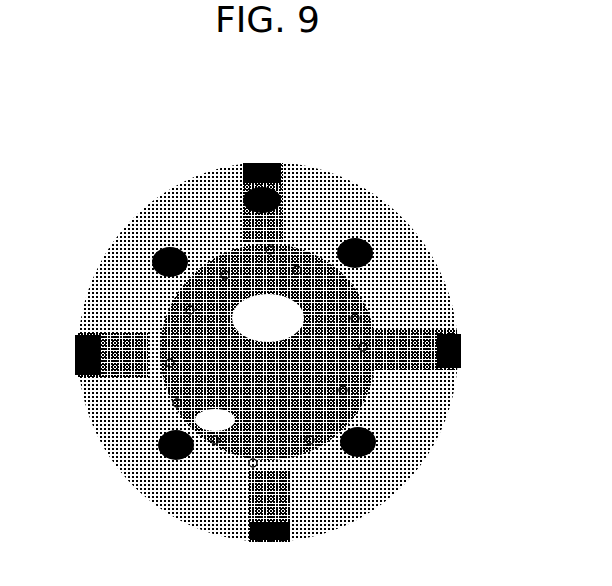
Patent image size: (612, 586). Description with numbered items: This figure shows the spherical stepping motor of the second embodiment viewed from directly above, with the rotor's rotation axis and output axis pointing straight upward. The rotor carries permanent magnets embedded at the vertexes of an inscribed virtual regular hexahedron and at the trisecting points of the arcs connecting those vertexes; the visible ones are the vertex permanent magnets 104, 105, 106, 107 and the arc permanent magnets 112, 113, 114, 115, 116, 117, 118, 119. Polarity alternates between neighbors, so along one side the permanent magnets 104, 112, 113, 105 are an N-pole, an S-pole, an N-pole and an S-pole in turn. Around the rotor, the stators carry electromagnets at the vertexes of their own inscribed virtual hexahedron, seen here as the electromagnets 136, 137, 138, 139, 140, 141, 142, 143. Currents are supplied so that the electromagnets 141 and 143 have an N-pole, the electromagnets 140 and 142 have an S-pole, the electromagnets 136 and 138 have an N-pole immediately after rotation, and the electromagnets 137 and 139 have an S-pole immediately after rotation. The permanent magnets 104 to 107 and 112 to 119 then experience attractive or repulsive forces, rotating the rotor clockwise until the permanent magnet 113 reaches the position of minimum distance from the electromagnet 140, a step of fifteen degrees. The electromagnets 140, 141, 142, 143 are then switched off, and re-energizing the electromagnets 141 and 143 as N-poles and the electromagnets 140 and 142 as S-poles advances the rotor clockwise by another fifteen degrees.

The permanent magnet 104 is at (363, 347).
The permanent magnet 105 is at (270, 250).
The permanent magnet 106 is at (170, 363).
The permanent magnet 107 is at (253, 463).
The permanent magnet 112 is at (355, 318).
The permanent magnet 113 is at (297, 270).
The permanent magnet 114 is at (225, 275).
The permanent magnet 115 is at (190, 310).
The permanent magnet 116 is at (177, 403).
The permanent magnet 117 is at (215, 440).
The permanent magnet 118 is at (310, 440).
The permanent magnet 119 is at (343, 390).
The electromagnet 136 is at (420, 352).
The electromagnet 137 is at (258, 203).
The electromagnet 138 is at (100, 343).
The electromagnet 139 is at (273, 513).
The electromagnet 140 is at (345, 305).
The electromagnet 141 is at (165, 248).
The electromagnet 142 is at (163, 460).
The electromagnet 143 is at (375, 453).